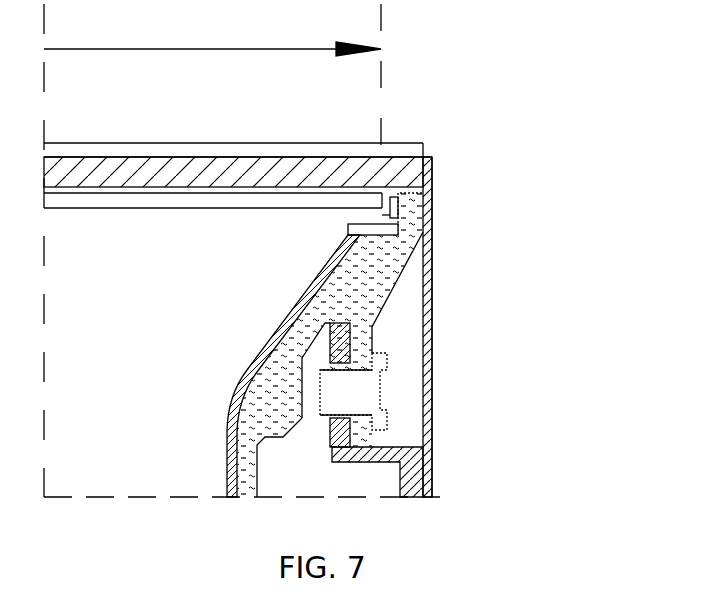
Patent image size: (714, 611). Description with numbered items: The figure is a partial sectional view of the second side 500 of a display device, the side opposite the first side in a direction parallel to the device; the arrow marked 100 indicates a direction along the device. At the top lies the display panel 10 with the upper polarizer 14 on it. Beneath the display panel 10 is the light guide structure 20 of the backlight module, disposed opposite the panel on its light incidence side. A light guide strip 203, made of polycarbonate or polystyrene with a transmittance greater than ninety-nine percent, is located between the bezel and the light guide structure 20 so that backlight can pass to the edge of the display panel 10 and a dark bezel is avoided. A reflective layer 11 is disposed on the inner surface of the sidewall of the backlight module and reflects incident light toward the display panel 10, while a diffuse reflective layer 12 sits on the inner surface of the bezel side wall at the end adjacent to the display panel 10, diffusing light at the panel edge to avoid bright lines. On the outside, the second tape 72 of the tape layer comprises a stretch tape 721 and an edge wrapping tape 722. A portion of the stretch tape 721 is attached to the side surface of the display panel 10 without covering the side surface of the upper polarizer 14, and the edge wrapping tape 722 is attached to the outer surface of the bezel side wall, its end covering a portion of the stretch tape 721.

The display module 100 is at (212, 34).
The display panel 10 is at (126, 157).
The upper polarizer 14 is at (230, 143).
The diffuse reflective layer 12 is at (393, 196).
The light guide structure 20 is at (62, 208).
The light guide strip 203 is at (345, 236).
The reflective layer 11 is at (244, 370).
The stretch tape 721 is at (424, 193).
The edge wrapping tape 722 is at (434, 255).
The second tape 72 is at (433, 345).
The second side 500 is at (541, 240).